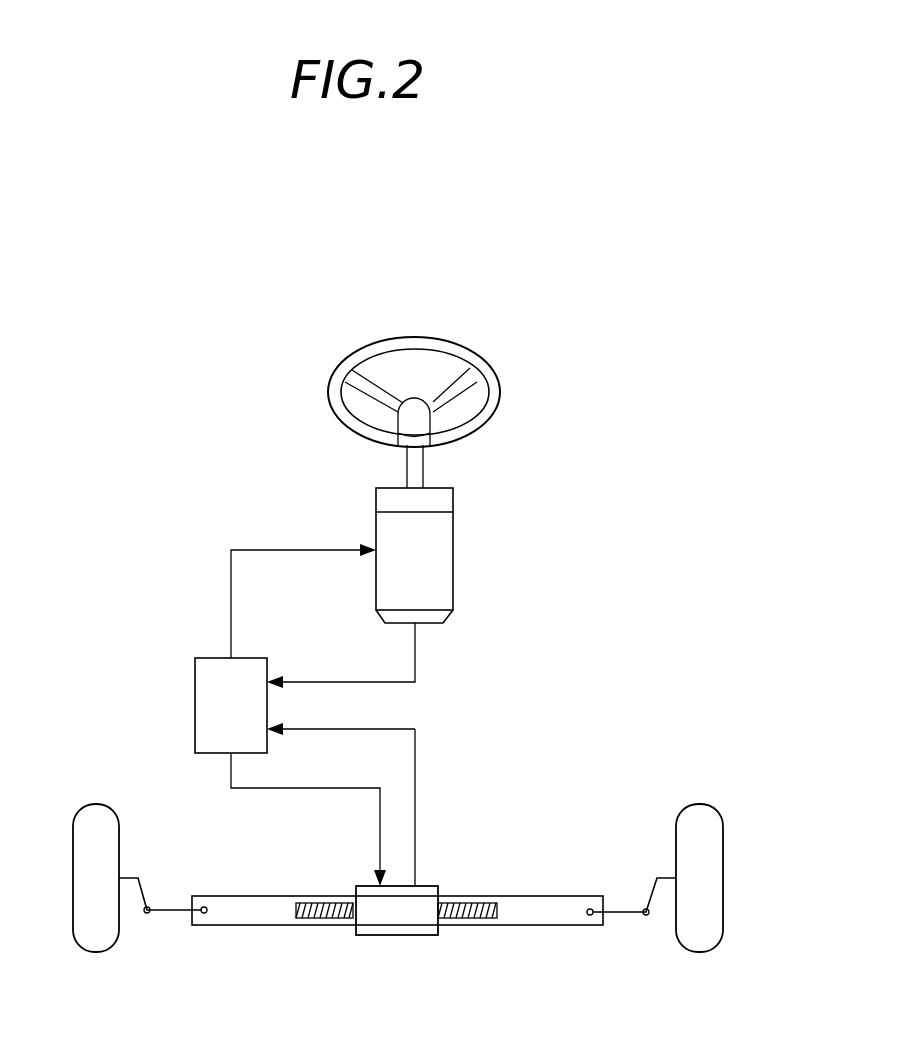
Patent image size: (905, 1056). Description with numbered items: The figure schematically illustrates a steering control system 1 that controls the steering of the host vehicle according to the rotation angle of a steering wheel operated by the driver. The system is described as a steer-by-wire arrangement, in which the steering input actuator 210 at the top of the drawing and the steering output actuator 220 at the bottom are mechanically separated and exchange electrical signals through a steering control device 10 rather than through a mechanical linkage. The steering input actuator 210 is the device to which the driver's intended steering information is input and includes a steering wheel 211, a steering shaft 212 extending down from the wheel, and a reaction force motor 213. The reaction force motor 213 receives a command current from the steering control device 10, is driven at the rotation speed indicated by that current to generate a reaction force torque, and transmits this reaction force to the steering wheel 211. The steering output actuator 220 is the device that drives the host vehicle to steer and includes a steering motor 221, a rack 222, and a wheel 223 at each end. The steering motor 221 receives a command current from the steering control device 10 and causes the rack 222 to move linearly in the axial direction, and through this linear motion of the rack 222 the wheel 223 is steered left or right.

The steering control system 1 is at (146, 278).
The steering control device 10 is at (195, 703).
The steering input actuator 210 is at (526, 333).
The steering wheel 211 is at (417, 343).
The steering shaft 212 is at (453, 548).
The reaction force motor 213 is at (427, 624).
The steering output actuator 220 is at (438, 958).
The steering motor 221 is at (397, 937).
The rack 222 is at (273, 927).
The wheel 223 is at (93, 953).